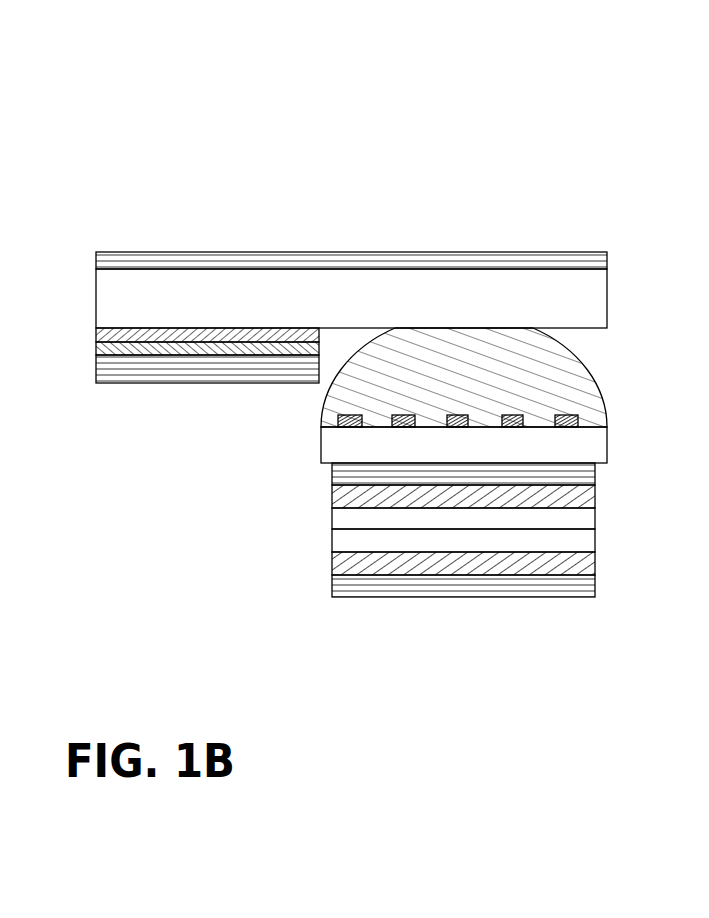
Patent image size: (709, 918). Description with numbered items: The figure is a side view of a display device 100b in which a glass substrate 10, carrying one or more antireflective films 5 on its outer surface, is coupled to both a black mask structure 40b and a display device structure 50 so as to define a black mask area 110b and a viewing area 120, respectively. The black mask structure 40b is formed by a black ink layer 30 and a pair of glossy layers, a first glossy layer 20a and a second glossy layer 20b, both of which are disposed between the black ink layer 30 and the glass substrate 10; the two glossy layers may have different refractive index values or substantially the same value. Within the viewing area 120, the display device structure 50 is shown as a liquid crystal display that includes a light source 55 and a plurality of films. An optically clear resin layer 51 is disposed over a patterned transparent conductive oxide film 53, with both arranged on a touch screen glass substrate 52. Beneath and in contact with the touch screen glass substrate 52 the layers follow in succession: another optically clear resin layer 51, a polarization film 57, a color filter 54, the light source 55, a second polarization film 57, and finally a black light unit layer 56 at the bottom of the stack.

The display device 100b is at (148, 165).
The black mask area 110b is at (98, 230).
The viewing area 120 is at (608, 230).
The antireflective film 5 is at (110, 262).
The glass substrate 10 is at (113, 305).
The first glossy layer 20a is at (97, 333).
The second glossy layer 20b is at (97, 348).
The black ink layer 30 is at (113, 367).
The black mask structure 40b is at (47, 386).
The display device structure 50 is at (467, 481).
The optically clear resin layer 51 is at (360, 393).
The touch screen glass substrate 52 is at (338, 443).
The patterned transparent conductive oxide film 53 is at (513, 410).
The color filter 54 is at (568, 517).
The light source 55 is at (565, 540).
The black light unit layer 56 is at (479, 605).
The polarization film 57 is at (347, 495).